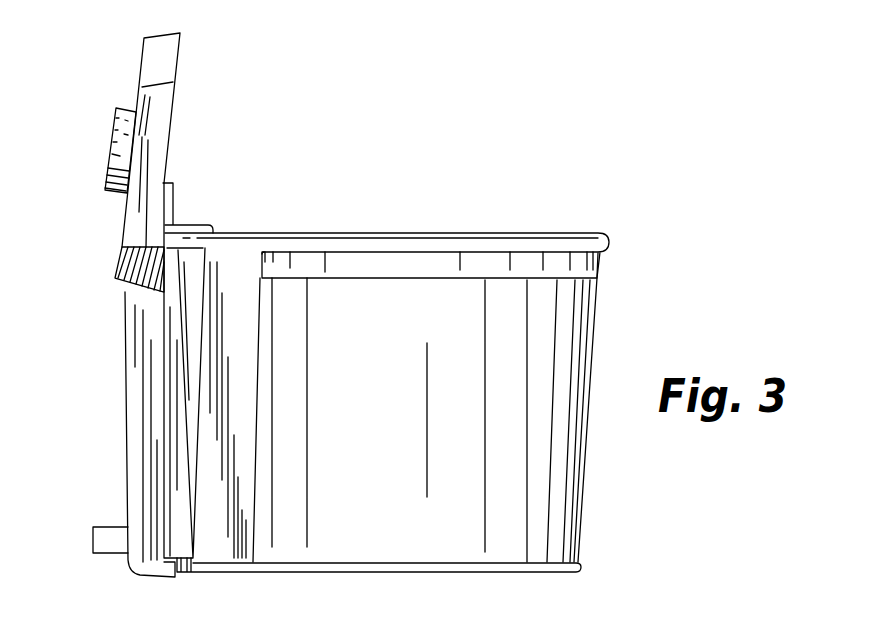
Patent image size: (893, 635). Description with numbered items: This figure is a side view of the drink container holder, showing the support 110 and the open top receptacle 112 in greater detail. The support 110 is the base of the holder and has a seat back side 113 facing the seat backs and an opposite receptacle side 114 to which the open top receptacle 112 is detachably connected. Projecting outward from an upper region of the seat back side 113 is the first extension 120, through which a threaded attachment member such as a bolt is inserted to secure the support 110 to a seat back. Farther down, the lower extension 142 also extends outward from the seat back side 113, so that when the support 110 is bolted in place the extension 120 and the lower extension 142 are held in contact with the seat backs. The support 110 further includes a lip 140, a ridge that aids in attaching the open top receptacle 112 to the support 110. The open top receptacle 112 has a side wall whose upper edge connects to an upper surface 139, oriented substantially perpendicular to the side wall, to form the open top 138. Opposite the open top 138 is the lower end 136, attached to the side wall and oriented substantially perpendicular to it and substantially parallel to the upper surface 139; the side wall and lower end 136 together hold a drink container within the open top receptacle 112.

The support 110 is at (197, 45).
The open top receptacle 112 is at (630, 274).
The seat back side 113 is at (142, 53).
The receptacle side 114 is at (172, 118).
The first extension 120 is at (120, 110).
The lower end 136 is at (453, 572).
The open top 138 is at (472, 226).
The upper surface 139 is at (513, 233).
The lip 140 is at (175, 192).
The lower extension 142 is at (103, 555).